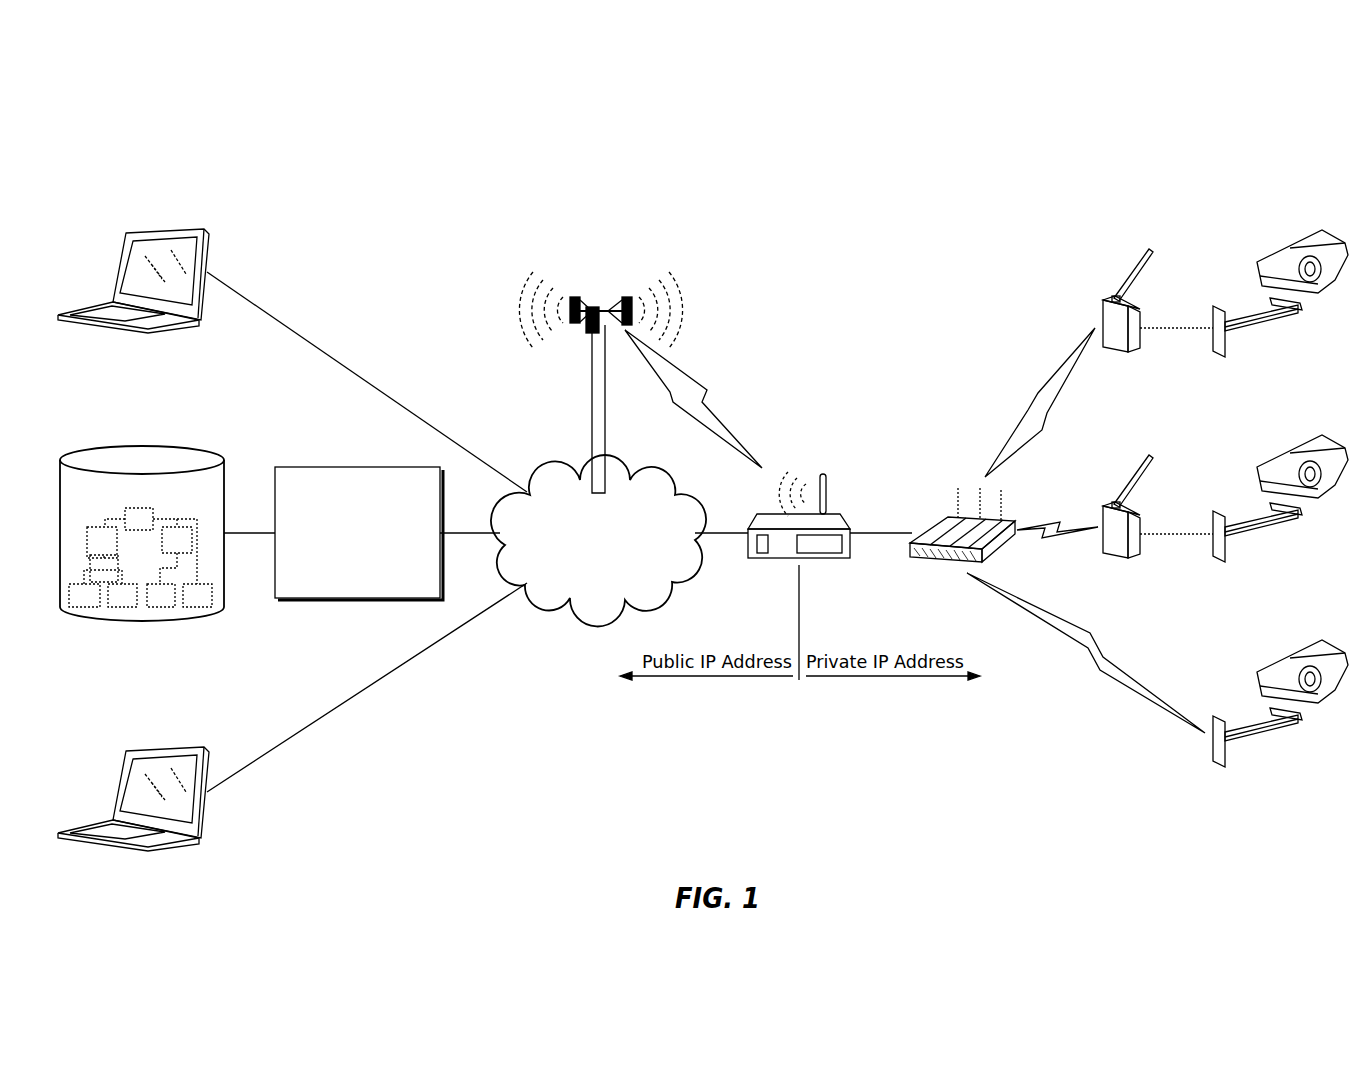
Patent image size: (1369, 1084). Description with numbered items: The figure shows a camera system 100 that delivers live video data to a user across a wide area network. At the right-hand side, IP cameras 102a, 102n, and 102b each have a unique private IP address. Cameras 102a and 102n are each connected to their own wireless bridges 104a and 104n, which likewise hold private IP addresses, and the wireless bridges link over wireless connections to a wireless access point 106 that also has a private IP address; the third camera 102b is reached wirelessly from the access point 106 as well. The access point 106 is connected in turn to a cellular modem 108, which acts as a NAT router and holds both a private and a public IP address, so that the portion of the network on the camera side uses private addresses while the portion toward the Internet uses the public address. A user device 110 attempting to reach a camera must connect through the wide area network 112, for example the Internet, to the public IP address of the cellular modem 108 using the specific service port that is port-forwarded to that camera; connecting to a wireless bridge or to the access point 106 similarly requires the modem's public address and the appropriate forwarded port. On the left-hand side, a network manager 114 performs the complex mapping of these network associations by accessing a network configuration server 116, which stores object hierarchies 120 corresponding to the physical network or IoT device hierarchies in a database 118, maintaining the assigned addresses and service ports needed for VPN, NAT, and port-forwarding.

The system 100 is at (1162, 140).
The IP camera 102a is at (1288, 238).
The IP camera 102n is at (1280, 489).
The IP camera 102b is at (1280, 694).
The wireless bridge 104a is at (1131, 246).
The wireless bridge 104n is at (1110, 488).
The wireless access point 106 is at (990, 565).
The cellular modem 108 is at (822, 560).
The user device 110 is at (196, 231).
The wide area network 112 is at (609, 557).
The network manager 114 is at (156, 781).
The network configuration server 116 is at (371, 576).
The database 118 is at (203, 501).
The object hierarchies 120 is at (182, 608).